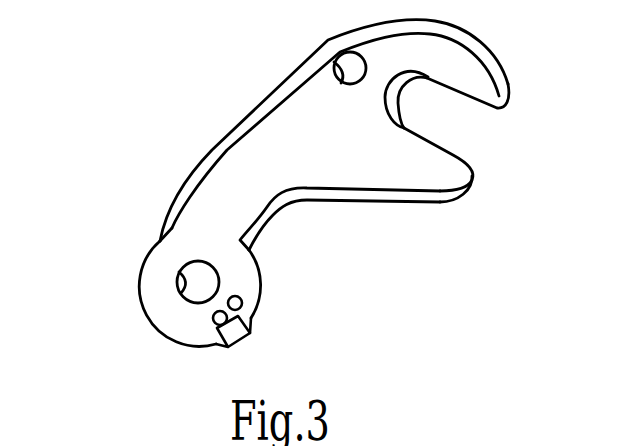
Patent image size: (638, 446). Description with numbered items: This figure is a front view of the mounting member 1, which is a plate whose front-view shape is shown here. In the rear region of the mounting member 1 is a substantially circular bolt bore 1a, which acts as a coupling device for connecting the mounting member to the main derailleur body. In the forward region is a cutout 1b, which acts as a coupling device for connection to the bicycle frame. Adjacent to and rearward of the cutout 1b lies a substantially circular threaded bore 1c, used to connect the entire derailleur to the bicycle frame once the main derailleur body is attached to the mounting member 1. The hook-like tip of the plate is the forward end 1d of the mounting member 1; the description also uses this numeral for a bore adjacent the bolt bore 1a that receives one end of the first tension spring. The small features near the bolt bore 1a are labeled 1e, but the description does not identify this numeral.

The mounting member 1 is at (212, 148).
The bolt bore 1a is at (178, 273).
The cutout 1b is at (454, 152).
The threaded bore 1c is at (334, 66).
The forward end 1d is at (511, 91).
The small holes and tab 1e is at (229, 318).